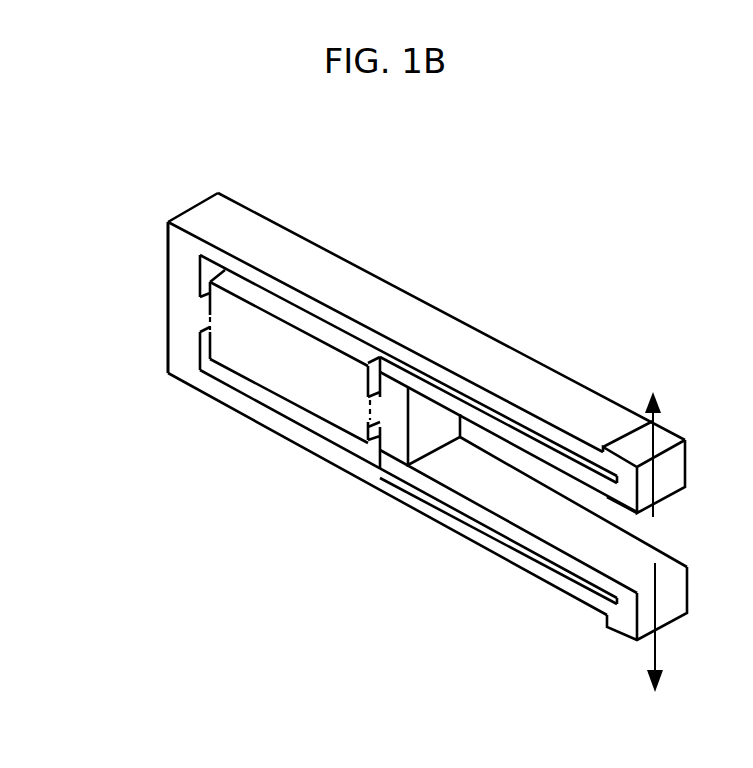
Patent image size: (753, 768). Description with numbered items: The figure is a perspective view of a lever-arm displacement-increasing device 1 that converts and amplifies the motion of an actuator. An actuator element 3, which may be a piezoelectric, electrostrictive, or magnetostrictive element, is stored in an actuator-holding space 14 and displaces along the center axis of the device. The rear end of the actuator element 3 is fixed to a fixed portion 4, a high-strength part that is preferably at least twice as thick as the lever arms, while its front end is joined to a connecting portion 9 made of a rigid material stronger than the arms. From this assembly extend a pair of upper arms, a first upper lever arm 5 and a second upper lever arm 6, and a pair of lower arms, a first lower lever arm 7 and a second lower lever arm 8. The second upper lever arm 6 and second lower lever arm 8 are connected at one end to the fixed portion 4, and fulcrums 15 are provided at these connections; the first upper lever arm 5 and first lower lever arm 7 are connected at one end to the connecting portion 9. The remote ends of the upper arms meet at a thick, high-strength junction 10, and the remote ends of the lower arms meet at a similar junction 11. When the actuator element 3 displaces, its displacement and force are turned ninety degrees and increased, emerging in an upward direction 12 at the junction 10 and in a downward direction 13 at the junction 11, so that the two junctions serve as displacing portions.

The lever-arm displacement-increasing device 1 is at (195, 400).
The actuator element 3 is at (305, 355).
The fixed portion 4 is at (185, 287).
The first upper lever arm 5 is at (492, 427).
The second upper lever arm 6 is at (452, 380).
The first lower lever arm 7 is at (478, 512).
The second lower lever arm 8 is at (525, 558).
The connecting portion 9 is at (367, 442).
The junction 10 is at (620, 473).
The junction 11 is at (627, 617).
The upward direction 12 is at (649, 438).
The downward direction 13 is at (656, 643).
The actuator-holding space 14 is at (220, 370).
The fulcrums 15 is at (183, 243).